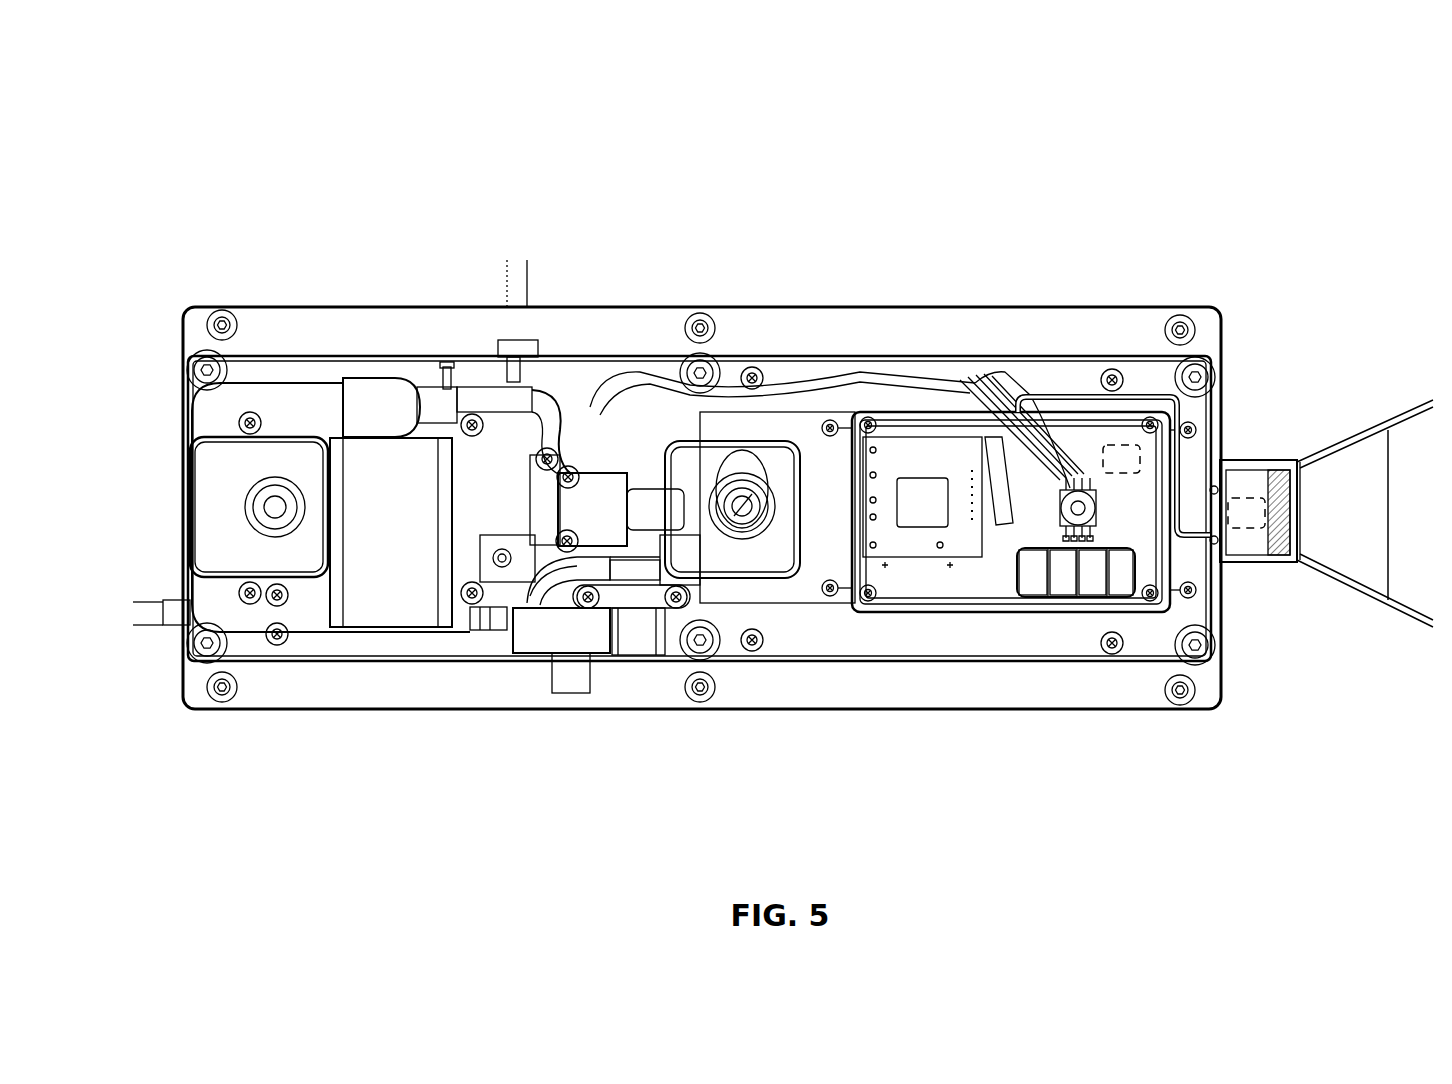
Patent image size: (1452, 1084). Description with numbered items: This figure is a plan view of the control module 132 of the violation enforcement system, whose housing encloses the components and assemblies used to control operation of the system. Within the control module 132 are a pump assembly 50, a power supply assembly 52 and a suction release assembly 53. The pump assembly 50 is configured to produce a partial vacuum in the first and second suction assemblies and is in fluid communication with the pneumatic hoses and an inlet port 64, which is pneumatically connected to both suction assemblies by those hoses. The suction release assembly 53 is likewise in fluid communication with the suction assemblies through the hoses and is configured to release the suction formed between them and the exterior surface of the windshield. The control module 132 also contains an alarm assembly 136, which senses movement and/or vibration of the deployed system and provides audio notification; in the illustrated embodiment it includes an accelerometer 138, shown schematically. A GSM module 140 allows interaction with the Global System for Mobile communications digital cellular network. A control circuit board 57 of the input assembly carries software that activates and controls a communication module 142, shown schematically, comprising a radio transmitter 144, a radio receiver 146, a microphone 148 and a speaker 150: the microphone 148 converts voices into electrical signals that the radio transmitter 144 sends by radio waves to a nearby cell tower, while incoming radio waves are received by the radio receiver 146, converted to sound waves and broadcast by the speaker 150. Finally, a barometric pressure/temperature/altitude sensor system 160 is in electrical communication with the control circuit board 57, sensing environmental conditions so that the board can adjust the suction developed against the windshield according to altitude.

The control module 132 is at (1170, 155).
The pump assembly 50 is at (529, 632).
The power supply assembly 52 is at (397, 560).
The suction release assembly 53 is at (610, 496).
The control circuit board 57 is at (1083, 430).
The inlet port 64 is at (562, 693).
The alarm assembly 136 is at (1268, 460).
The accelerometer 138 is at (1238, 510).
The GSM module 140 is at (940, 487).
The communication module 142 is at (1137, 557).
The radio transmitter 144 is at (1038, 597).
The radio receiver 146 is at (1068, 597).
The microphone 148 is at (1093, 597).
The speaker 150 is at (1120, 597).
The barometric pressure/temperature/altitude sensor system 160 is at (1122, 455).